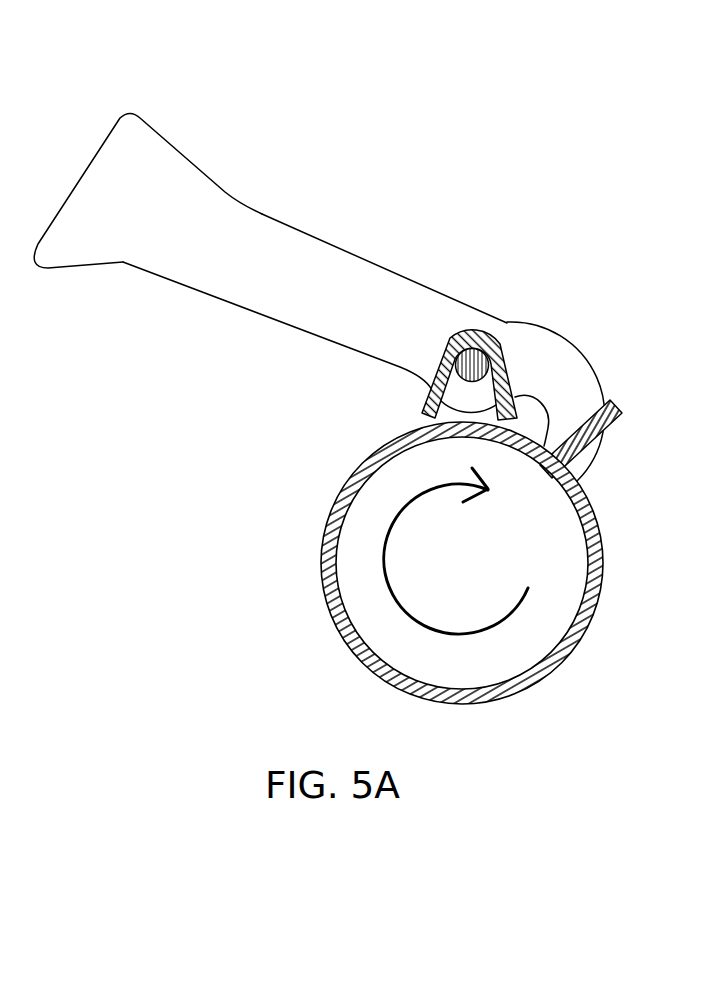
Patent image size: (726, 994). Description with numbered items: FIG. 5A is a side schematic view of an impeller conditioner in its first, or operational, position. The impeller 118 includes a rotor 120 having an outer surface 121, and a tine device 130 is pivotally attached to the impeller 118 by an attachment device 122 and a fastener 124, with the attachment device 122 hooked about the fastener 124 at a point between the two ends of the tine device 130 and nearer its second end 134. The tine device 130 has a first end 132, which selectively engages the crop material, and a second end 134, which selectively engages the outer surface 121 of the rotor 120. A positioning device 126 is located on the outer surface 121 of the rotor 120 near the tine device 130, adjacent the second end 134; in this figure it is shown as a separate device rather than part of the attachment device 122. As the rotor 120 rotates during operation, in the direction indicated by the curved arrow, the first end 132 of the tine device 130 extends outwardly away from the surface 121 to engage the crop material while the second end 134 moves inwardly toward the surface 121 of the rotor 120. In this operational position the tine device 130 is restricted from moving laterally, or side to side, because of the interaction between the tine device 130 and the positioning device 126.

The impeller 118 is at (527, 130).
The rotor 120 is at (555, 652).
The outer surface 121 is at (470, 703).
The attachment device 122 is at (448, 338).
The fastener 124 is at (478, 345).
The positioning device 126 is at (606, 436).
The tine device 130 is at (368, 307).
The first end 132 is at (73, 233).
The second end 134 is at (587, 465).